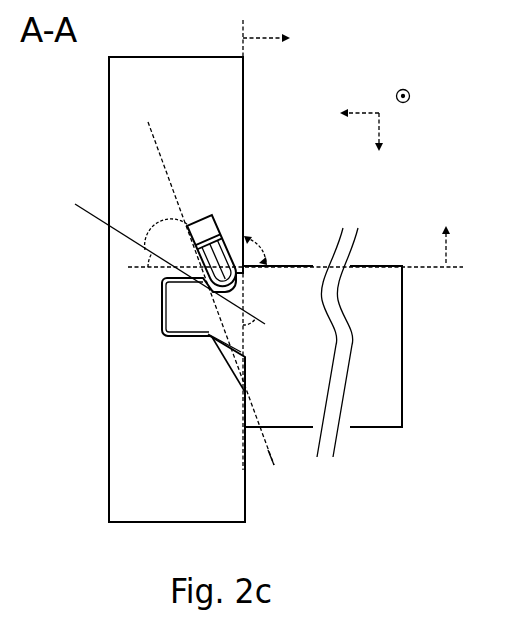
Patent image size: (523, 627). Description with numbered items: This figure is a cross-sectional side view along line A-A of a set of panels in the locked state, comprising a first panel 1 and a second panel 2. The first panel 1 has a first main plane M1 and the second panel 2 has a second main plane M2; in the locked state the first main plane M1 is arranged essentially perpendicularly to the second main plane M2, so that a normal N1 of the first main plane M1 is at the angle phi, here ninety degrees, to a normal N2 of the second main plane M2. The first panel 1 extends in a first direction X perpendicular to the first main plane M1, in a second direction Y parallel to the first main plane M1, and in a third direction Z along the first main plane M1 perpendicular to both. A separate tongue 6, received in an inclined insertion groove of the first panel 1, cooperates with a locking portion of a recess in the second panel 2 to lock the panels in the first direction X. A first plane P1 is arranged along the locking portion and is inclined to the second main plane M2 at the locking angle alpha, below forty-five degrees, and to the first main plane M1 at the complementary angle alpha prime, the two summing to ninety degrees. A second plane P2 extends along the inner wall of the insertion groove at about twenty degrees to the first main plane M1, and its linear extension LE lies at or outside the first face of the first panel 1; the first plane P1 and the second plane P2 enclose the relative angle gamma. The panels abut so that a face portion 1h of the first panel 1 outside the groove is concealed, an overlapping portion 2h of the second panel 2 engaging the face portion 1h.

The first panel 1 is at (187, 138).
The face portion 1h is at (247, 413).
The second panel 2 is at (309, 358).
The overlapping portion 2h is at (243, 412).
The separate tongue 6 is at (202, 218).
The first plane P1 is at (156, 255).
The second plane P2 is at (203, 283).
The linear extension LE is at (275, 470).
The first main plane M1 is at (246, 235).
The second main plane M2 is at (314, 271).
The normal of the first main plane N1 is at (282, 39).
The normal of the second main plane N2 is at (450, 229).
The first direction X is at (351, 114).
The second direction Y is at (378, 144).
The third direction Z is at (415, 84).